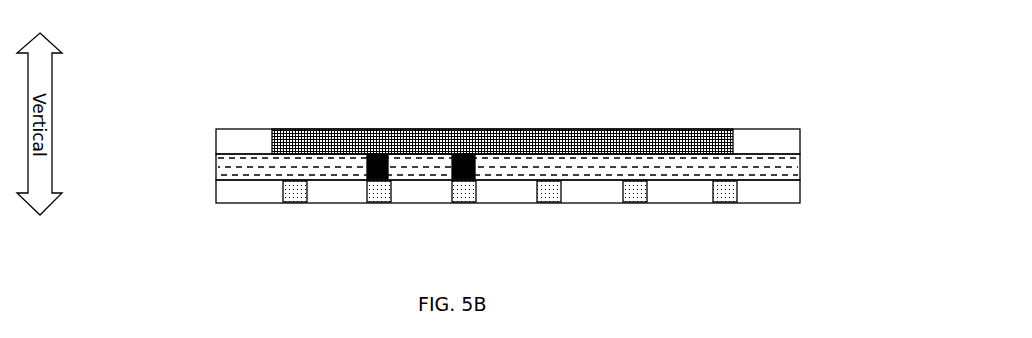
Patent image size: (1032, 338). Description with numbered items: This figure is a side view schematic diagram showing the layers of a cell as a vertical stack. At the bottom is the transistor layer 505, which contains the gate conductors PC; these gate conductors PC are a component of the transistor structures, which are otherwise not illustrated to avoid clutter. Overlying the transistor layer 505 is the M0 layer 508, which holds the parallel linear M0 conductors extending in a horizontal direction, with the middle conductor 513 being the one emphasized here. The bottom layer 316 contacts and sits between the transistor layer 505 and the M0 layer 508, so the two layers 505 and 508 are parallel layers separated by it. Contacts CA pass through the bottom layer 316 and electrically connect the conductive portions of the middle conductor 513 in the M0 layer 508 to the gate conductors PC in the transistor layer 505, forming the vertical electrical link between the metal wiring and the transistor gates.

The M0 layer 508 is at (802, 138).
The middle conductor 513 is at (516, 151).
The bottom layer 316 is at (802, 167).
The transistor layer 505 is at (802, 190).
The contacts CA is at (388, 166).
The gate conductors PC is at (283, 190).